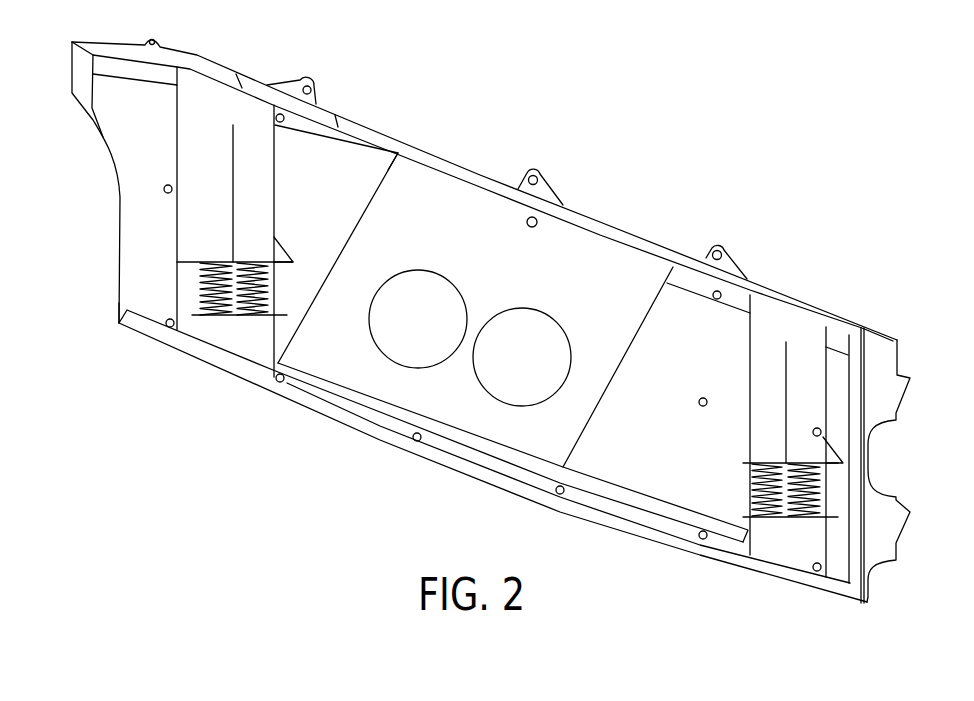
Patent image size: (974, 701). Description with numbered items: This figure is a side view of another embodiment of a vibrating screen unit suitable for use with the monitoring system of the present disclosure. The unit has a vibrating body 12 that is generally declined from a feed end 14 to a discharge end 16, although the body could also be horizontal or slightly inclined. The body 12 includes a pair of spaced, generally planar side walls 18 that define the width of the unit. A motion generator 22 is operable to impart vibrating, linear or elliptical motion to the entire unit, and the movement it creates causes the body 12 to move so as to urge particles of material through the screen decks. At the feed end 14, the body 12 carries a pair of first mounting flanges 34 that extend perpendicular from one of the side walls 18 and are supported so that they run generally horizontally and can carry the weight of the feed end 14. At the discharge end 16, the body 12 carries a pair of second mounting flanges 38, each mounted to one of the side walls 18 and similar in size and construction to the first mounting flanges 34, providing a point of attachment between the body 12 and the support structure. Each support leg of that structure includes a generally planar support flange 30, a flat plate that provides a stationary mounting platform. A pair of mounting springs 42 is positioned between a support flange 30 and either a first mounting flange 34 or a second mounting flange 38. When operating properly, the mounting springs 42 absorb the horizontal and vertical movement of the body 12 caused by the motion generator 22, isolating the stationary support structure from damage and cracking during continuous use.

The vibrating body 12 is at (628, 230).
The feed end 14 is at (72, 67).
The discharge end 16 is at (897, 420).
The side walls 18 is at (338, 177).
The motion generator 22 is at (503, 403).
The support flange 30 is at (235, 317).
The first mounting flanges 34 is at (195, 260).
The second mounting flanges 38 is at (800, 463).
The mounting springs 42 is at (200, 292).